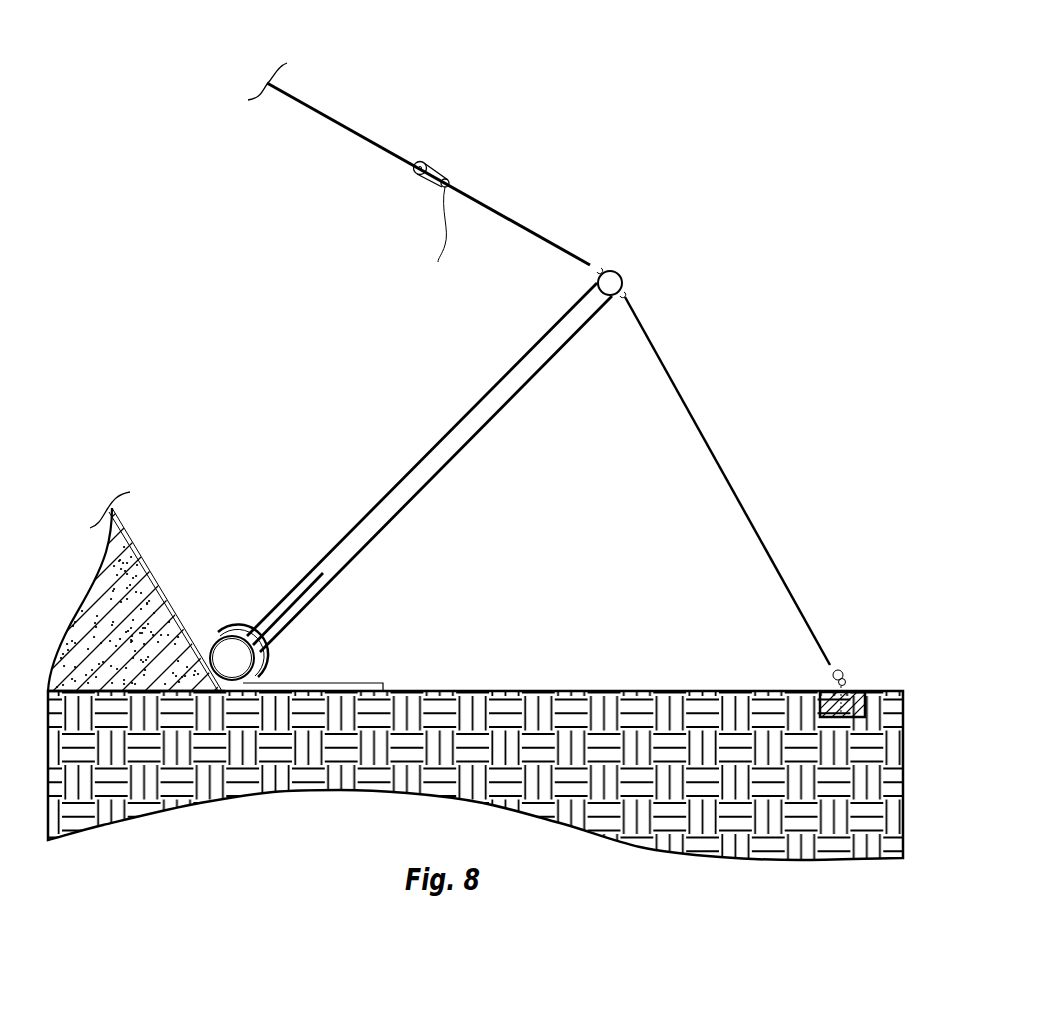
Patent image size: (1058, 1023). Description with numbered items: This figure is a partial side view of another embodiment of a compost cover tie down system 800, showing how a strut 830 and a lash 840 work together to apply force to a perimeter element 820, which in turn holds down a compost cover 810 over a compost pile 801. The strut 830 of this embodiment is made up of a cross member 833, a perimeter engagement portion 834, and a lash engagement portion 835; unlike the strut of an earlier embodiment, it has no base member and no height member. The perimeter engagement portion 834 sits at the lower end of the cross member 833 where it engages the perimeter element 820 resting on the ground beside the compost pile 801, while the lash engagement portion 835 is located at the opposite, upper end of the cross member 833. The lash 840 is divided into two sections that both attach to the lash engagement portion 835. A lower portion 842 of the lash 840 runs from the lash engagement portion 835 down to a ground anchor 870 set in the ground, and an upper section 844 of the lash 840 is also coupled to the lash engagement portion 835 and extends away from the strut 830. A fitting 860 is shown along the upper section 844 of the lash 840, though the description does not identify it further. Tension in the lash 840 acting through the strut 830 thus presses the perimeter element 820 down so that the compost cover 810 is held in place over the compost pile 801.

The compost cover tie down system 800 is at (808, 47).
The compost pile 801 is at (63, 539).
The compost cover 810 is at (140, 556).
The perimeter element 820 is at (232, 658).
The strut 830 is at (429, 467).
The cross member 833 is at (423, 473).
The perimeter engagement portion 834 is at (260, 667).
The lash engagement portion 835 is at (620, 275).
The lash 840 is at (539, 360).
The lower portion 842 is at (721, 463).
The upper section 844 is at (352, 128).
The hook 860 is at (428, 170).
The ground anchor 870 is at (844, 654).